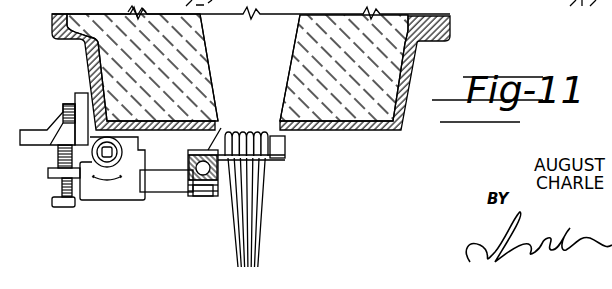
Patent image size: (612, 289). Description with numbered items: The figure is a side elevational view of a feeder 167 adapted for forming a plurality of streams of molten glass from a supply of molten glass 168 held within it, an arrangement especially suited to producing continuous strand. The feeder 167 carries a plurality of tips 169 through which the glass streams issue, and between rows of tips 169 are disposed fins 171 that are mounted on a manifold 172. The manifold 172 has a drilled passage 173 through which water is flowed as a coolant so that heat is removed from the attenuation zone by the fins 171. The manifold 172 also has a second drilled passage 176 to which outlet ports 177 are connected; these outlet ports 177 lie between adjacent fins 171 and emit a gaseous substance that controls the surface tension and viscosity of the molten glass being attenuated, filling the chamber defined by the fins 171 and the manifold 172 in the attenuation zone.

The feeder 167 is at (282, 135).
The supply of molten glass 168 is at (265, 51).
The tips 169 is at (274, 150).
The fins 171 is at (283, 152).
The manifold 172 is at (213, 198).
The drilled passage 173 is at (193, 197).
The drilled passage 176 is at (188, 151).
The outlet ports 177 is at (221, 128).